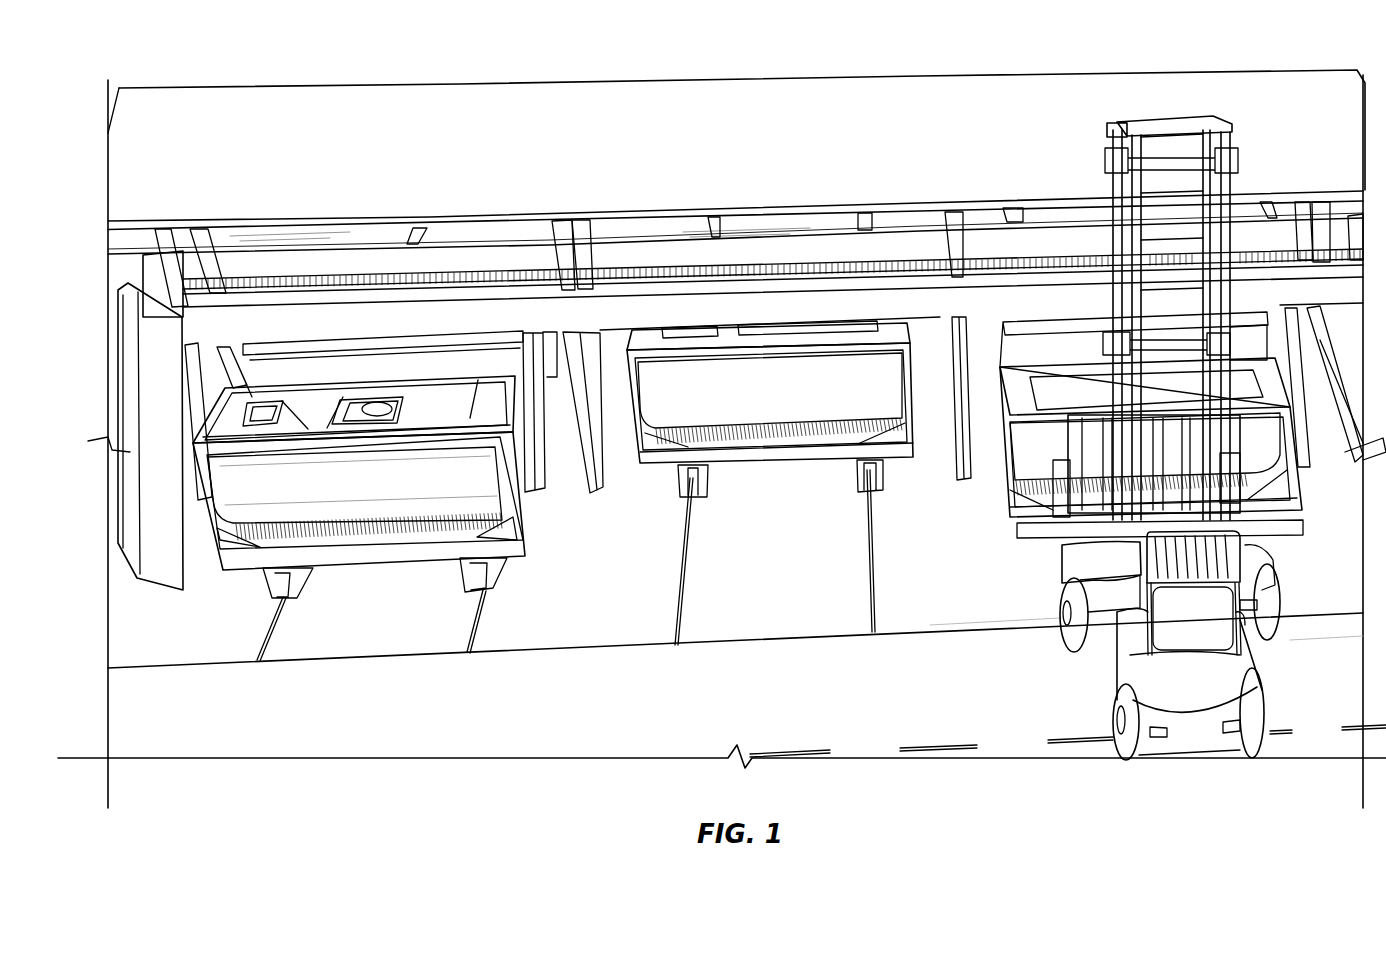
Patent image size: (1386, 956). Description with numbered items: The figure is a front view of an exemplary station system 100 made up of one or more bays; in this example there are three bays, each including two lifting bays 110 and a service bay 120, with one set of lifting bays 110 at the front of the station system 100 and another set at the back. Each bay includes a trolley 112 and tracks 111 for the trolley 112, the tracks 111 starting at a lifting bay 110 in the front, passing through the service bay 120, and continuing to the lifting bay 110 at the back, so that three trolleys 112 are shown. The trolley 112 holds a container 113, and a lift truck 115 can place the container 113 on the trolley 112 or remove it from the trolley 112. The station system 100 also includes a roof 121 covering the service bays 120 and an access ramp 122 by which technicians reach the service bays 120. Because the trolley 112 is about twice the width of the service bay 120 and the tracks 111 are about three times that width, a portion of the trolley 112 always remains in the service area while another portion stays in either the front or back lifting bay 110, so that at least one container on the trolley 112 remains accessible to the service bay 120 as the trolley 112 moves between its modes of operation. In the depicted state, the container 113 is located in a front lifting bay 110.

The station system 100 is at (235, 72).
The lifting bay 110 is at (974, 605).
The tracks 111 is at (282, 647).
The trolley 112 is at (557, 537).
The container 113 is at (270, 497).
The lift truck 115 is at (1265, 675).
The service bay 120 is at (700, 228).
The roof 121 is at (140, 178).
The access ramp 122 is at (145, 592).